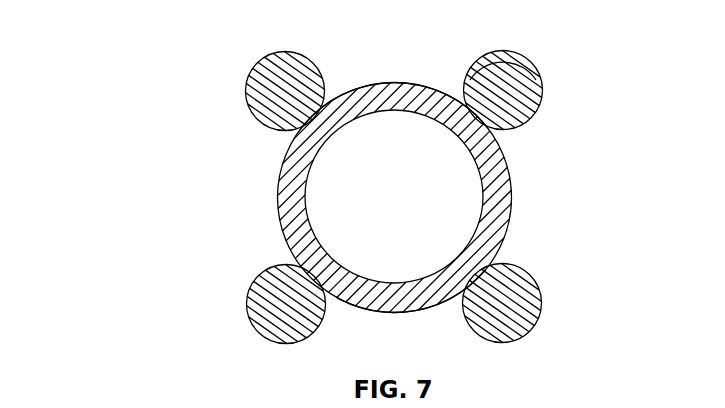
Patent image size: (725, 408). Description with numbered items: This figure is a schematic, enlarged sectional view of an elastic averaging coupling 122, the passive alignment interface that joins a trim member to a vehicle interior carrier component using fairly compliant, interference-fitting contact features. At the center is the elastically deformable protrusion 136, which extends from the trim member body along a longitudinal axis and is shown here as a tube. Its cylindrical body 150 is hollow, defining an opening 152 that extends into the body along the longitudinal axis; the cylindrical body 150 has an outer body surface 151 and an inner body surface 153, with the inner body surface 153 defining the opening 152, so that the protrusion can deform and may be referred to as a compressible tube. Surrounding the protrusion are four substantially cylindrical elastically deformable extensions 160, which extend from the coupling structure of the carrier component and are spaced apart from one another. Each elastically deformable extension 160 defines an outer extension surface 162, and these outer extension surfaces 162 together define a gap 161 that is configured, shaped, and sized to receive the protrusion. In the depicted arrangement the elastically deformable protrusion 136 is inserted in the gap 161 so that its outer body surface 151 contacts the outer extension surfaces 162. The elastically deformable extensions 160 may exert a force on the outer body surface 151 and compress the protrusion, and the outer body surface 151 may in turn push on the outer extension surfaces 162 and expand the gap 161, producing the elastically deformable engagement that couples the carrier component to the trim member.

The elastic averaging coupling 122 is at (516, 40).
The elastically deformable protrusion 136 is at (425, 309).
The cylindrical body 150 is at (365, 310).
The outer body surface 151 is at (512, 197).
The opening 152 is at (480, 197).
The inner body surface 153 is at (305, 198).
The elastically deformable extension 160 is at (258, 88).
The gap 161 is at (370, 50).
The outer extension surface 162 is at (268, 60).